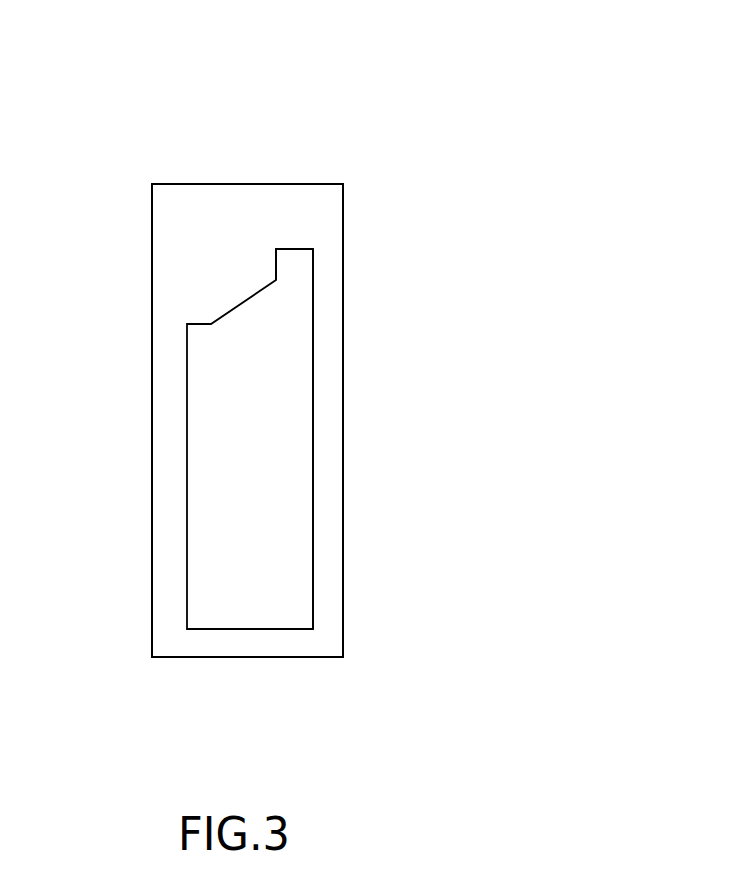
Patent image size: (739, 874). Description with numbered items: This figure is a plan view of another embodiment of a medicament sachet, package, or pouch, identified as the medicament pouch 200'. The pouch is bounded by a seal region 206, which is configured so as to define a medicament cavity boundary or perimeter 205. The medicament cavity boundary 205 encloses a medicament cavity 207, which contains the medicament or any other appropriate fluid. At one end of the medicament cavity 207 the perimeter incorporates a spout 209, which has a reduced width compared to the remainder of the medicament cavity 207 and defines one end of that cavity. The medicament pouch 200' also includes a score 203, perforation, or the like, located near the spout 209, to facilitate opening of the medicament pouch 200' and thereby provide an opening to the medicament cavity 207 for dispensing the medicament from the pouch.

The medicament pouch 200' is at (376, 340).
The score 203 is at (336, 284).
The medicament cavity boundary 205 is at (313, 570).
The seal region 206 is at (180, 235).
The medicament cavity 207 is at (275, 535).
The spout 209 is at (300, 263).